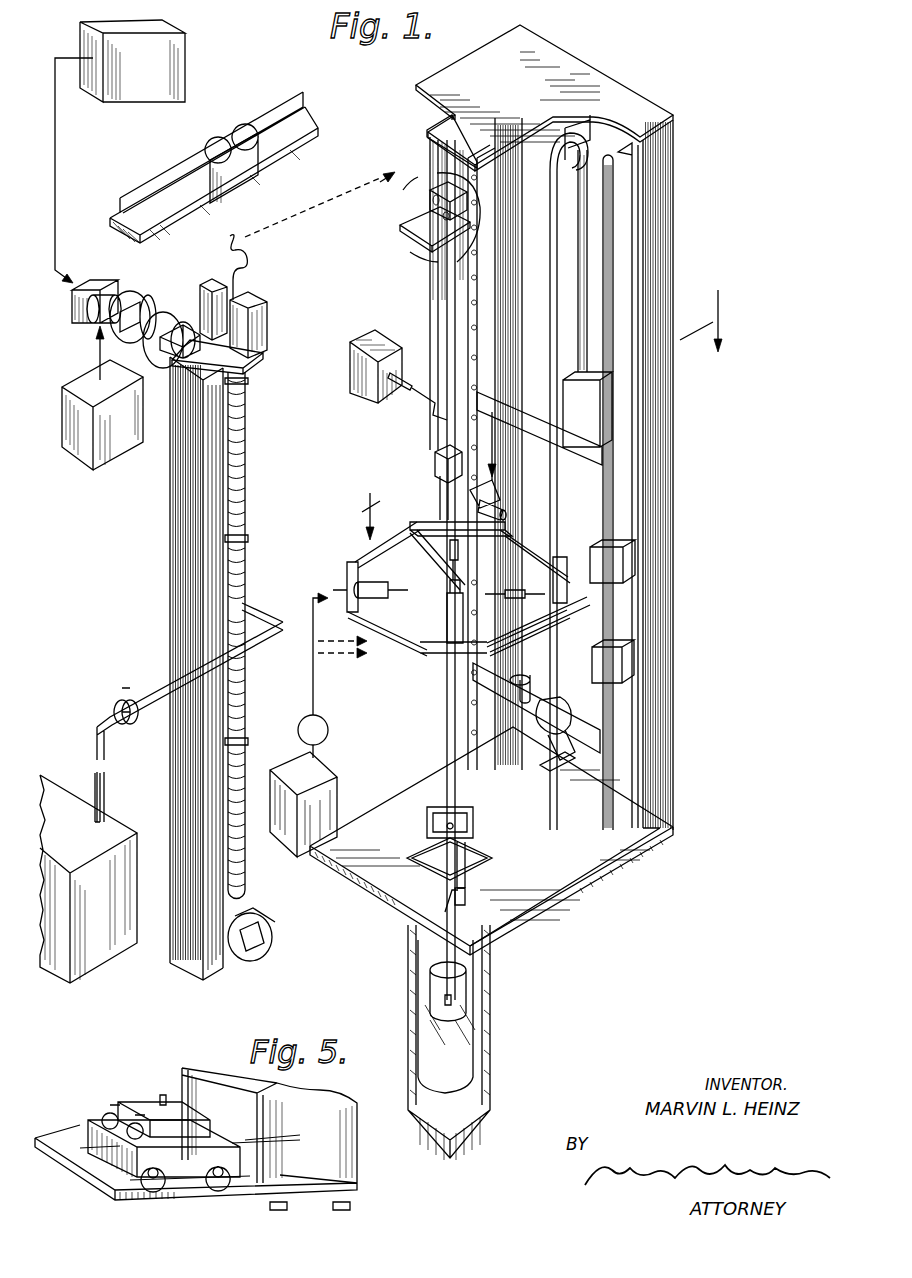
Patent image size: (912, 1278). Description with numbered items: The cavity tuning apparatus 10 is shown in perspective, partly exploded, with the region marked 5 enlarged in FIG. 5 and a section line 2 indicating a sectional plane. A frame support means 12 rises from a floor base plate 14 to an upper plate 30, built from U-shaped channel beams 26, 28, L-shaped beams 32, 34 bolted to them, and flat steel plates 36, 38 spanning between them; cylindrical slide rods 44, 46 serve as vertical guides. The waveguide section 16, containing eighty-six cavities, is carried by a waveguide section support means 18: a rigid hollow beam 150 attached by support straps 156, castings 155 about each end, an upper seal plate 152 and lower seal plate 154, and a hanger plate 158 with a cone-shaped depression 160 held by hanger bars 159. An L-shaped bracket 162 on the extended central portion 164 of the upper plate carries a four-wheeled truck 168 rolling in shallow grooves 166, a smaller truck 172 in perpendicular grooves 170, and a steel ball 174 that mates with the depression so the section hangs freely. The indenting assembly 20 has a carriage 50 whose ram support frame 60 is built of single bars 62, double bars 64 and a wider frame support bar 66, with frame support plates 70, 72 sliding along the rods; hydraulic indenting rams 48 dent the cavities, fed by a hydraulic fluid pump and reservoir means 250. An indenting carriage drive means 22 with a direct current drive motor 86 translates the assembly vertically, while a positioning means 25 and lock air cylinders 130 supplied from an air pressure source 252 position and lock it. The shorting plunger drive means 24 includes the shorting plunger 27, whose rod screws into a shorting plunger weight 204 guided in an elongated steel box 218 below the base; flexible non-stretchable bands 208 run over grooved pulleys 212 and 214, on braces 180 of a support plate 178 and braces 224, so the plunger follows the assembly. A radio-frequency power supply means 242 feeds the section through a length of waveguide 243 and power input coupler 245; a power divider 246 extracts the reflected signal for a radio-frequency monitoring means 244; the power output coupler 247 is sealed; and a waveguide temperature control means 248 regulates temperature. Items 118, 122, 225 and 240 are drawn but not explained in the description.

In FIG. 1, the cavity tuning apparatus 10 is at (687, 241).
In FIG. 1, the frame support means 12 is at (676, 447).
In FIG. 1, the floor base plate 14 is at (554, 918).
In FIG. 1, the waveguide section 16 is at (256, 590).
In FIG. 1, the waveguide section support means 18 is at (166, 579).
In FIG. 1, the indenting assembly 20 is at (409, 453).
In FIG. 1, the indenting carriage drive means 22 is at (578, 301).
In FIG. 1, the shorting plunger drive means 24 is at (428, 896).
In FIG. 1, the positioning means 25 is at (504, 501).
In FIG. 1, the U-shaped channel beam 26 is at (503, 347).
In FIG. 1, the shorting plunger 27 is at (447, 600).
In FIG. 1, the U-shaped channel beam 28 is at (672, 508).
In FIG. 1, the upper plate 30 is at (596, 43).
In FIG. 1, the L-shaped beam 32 is at (462, 300).
In FIG. 1, the L-shaped beam 34 is at (622, 188).
In FIG. 1, the flat steel plate 36 is at (548, 430).
In FIG. 1, the flat steel plate 38 is at (536, 684).
In FIG. 1, the cylindrical slide rod 44 is at (447, 298).
In FIG. 1, the cylindrical slide rod 46 is at (614, 245).
In FIG. 1, the hydraulic indenting ram 48 is at (395, 572).
In FIG. 1, the carriage 50 is at (431, 464).
In FIG. 1, the ram support frame 60 is at (378, 654).
In FIG. 1, the single bar 62 is at (398, 610).
In FIG. 1, the double bar 64 is at (348, 566).
In FIG. 1, the frame support bar 66 is at (512, 578).
In FIG. 1, the frame support plate 70 is at (421, 511).
In FIG. 1, the frame support plate 72 is at (550, 665).
In FIG. 1, the direct current drive motor 86 is at (550, 688).
In FIG. 1, the perforated strip 118 is at (482, 325).
In FIG. 1, the perforations 122 is at (483, 375).
In FIG. 1, the lock air cylinder 130 is at (505, 512).
In FIG. 1, the rigid hollow beam 150 is at (170, 500).
In FIG. 1, the upper waveguide seal plate 152 is at (260, 352).
In FIG. 1, the lower waveguide seal plate 154 is at (427, 825).
In FIG. 1, the casting 155 is at (248, 376).
In FIG. 1, the support strap 156 is at (248, 392).
In FIG. 1, the hanger plate 158 is at (244, 280).
In FIG. 1, the hanger bar 159 is at (266, 305).
In FIG. 1, the cone-shaped depression 160 is at (208, 290).
In FIG. 1, the L-shaped bracket 162 is at (408, 212).
In FIG. 5, the L-shaped bracket 162 is at (190, 1200).
In FIG. 1, the extended central portion 164 is at (435, 132).
In FIG. 5, the shallow grooves 166 is at (78, 1172).
In FIG. 5, the four-wheeled truck 168 is at (245, 1115).
In FIG. 5, the shallow grooves 170 is at (88, 1125).
In FIG. 5, the second four-wheeled truck 172 is at (125, 1098).
In FIG. 5, the steel ball 174 is at (165, 1090).
In FIG. 1, the support plate 178 is at (473, 825).
In FIG. 1, the braces 180 is at (475, 857).
In FIG. 1, the shorting plunger weight 204 is at (470, 992).
In FIG. 1, the flexible non-stretchable bands 208 is at (445, 785).
In FIG. 1, the grooved pulleys 212 is at (435, 868).
In FIG. 1, the grooved pulleys 214 is at (450, 900).
In FIG. 1, the elongated steel box 218 is at (408, 1038).
In FIG. 1, the braces 224 is at (470, 900).
In FIG. 1, the beaker 225 is at (472, 1043).
In FIG. 1, the rail 240 is at (226, 127).
In FIG. 1, the radio-frequency power supply means 242 is at (85, 372).
In FIG. 1, the length of waveguide 243 is at (132, 290).
In FIG. 1, the radio-frequency monitoring means 244 is at (182, 30).
In FIG. 1, the power input coupler 245 is at (190, 302).
In FIG. 1, the power divider 246 is at (112, 278).
In FIG. 1, the power output coupler 247 is at (272, 930).
In FIG. 1, the waveguide temperature control means 248 is at (110, 822).
In FIG. 1, the hydraulic fluid pump and reservoir means 250 is at (330, 770).
In FIG. 1, the air pressure source 252 is at (358, 332).
In FIG. 1, the section line 2 is at (542, 410).
In FIG. 1, the view arrow 5 is at (400, 228).